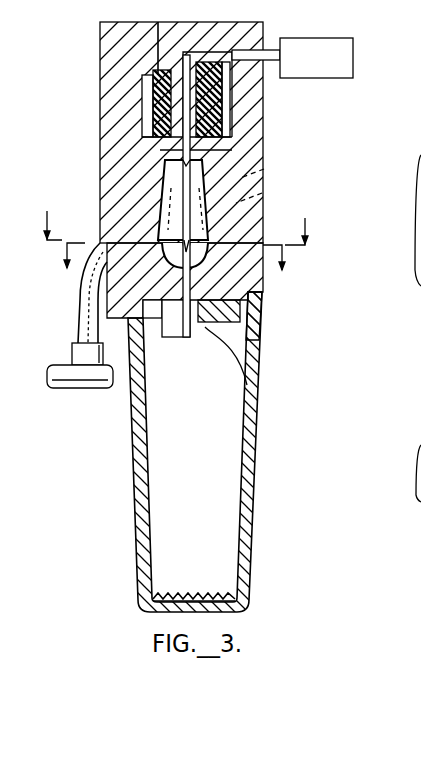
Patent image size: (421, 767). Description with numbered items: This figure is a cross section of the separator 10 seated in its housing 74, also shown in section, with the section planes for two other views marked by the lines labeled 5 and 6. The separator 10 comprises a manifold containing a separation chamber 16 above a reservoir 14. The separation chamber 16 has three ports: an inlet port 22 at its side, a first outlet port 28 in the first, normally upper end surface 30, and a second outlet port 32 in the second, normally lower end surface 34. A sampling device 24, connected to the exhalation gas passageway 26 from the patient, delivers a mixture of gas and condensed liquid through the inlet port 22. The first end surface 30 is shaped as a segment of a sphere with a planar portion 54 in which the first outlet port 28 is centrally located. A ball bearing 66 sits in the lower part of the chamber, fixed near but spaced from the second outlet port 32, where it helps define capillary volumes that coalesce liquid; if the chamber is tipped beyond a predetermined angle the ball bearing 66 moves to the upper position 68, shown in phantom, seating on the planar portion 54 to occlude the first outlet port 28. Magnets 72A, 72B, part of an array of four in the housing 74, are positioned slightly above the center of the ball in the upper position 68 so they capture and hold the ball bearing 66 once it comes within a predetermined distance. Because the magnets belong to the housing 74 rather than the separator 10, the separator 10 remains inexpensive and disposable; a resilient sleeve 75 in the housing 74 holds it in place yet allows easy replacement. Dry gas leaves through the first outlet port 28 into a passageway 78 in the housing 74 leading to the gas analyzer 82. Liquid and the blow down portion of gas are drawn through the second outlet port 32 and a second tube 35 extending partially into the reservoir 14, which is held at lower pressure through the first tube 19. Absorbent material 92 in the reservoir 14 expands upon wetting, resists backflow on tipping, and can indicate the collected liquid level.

The separator 10 is at (297, 306).
The reservoir 14 is at (253, 434).
The separation chamber 16 is at (162, 183).
The first tube 19 is at (247, 378).
The inlet port 22 is at (158, 222).
The sampling device 24 is at (73, 353).
The exhalation gas passageway 26 is at (72, 382).
The first outlet port 28 is at (163, 136).
The first end surface 30 is at (165, 150).
The second outlet port 32 is at (262, 302).
The second end surface 34 is at (214, 259).
The second tube 35 is at (247, 331).
The planar portion 54 is at (264, 141).
The ball bearing 66 is at (262, 193).
The upper position 68 is at (264, 169).
The magnet 72A is at (148, 97).
The magnet 72B is at (264, 96).
The housing 74 is at (264, 127).
The resilient sleeve 75 is at (158, 26).
The passageway 78 is at (256, 34).
The gas analyzer 82 is at (316, 47).
The absorbent material 92 is at (205, 593).
The section line 5- 5 is at (175, 220).
The section line 6- 6 is at (175, 271).